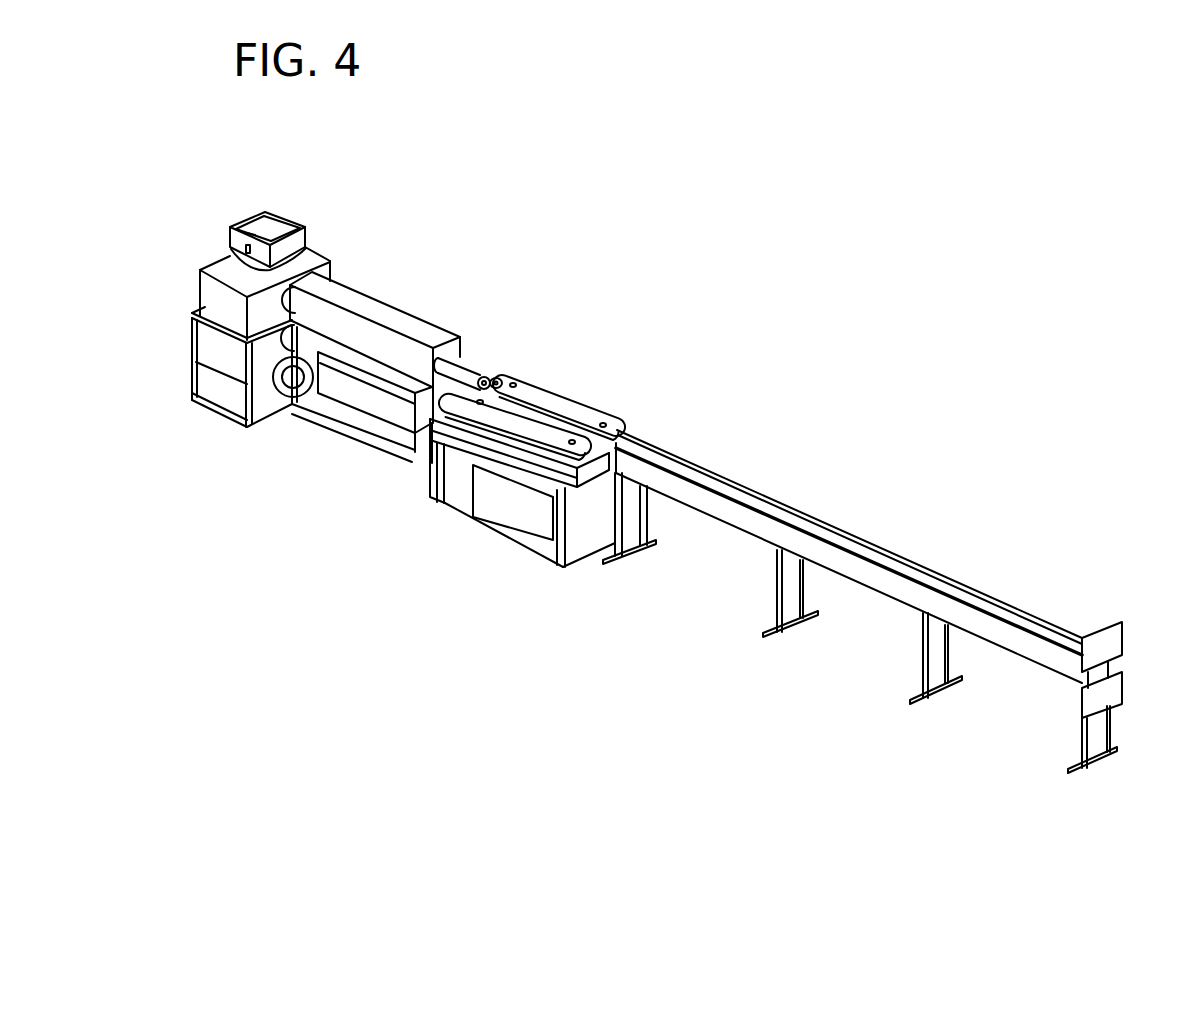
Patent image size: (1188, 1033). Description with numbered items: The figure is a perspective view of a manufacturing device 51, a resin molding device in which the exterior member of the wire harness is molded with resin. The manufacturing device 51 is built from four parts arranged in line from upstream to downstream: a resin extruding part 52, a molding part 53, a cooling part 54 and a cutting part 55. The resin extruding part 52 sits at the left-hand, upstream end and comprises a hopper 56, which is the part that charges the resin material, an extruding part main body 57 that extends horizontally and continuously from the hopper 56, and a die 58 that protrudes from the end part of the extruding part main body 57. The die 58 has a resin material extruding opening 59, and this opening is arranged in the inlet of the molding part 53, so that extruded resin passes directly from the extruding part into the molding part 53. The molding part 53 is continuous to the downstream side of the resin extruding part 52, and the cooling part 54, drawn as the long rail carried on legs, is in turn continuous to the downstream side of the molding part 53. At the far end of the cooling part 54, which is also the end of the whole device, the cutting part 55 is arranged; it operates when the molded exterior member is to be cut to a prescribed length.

The manufacturing device 51 is at (775, 355).
The resin extruding part 52 is at (442, 283).
The molding part 53 is at (578, 376).
The cooling part 54 is at (868, 528).
The cutting part 55 is at (1082, 670).
The hopper 56 is at (298, 212).
The extruding part main body 57 is at (446, 323).
The die 58 is at (485, 377).
The resin material extruding opening 59 is at (497, 378).